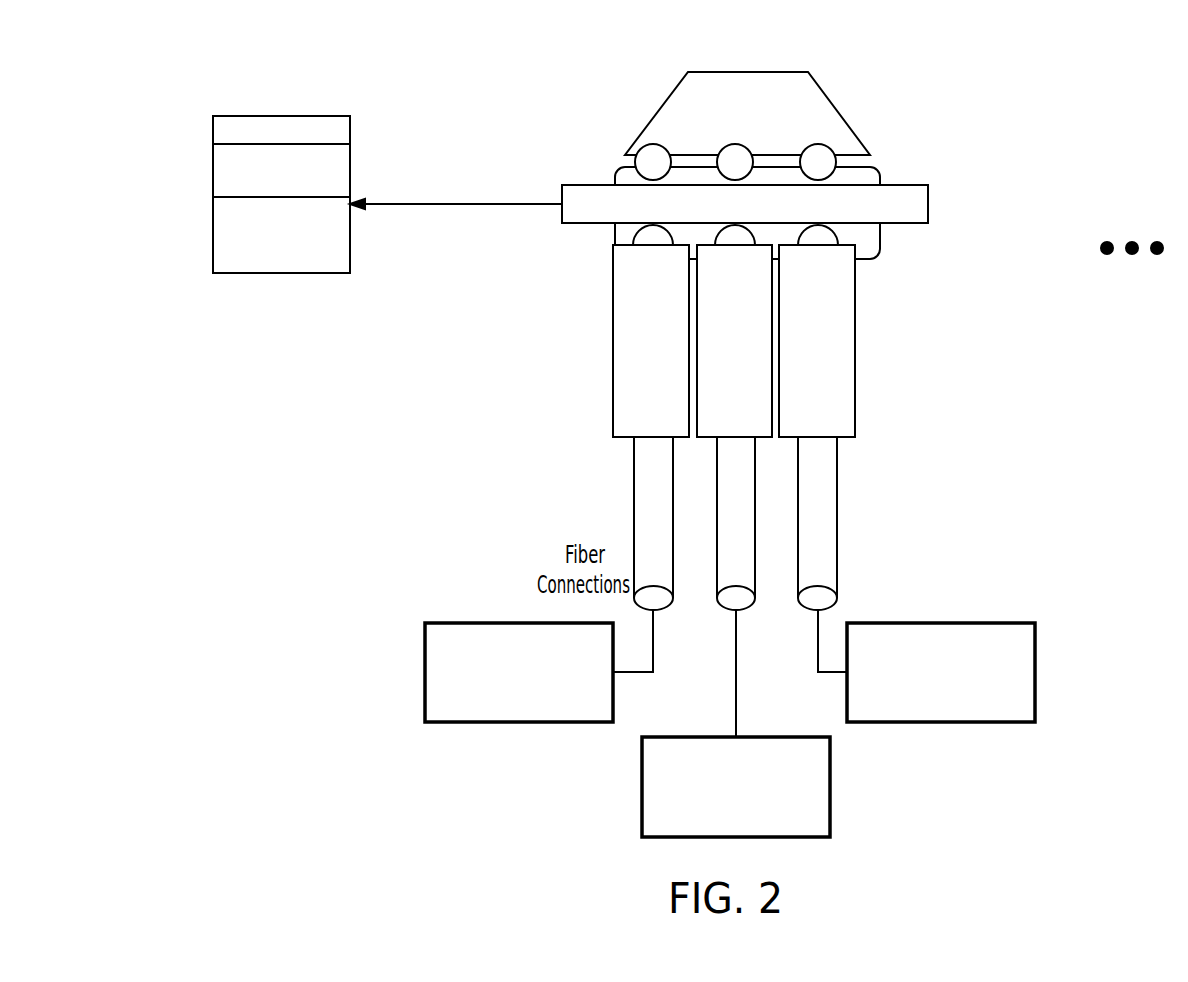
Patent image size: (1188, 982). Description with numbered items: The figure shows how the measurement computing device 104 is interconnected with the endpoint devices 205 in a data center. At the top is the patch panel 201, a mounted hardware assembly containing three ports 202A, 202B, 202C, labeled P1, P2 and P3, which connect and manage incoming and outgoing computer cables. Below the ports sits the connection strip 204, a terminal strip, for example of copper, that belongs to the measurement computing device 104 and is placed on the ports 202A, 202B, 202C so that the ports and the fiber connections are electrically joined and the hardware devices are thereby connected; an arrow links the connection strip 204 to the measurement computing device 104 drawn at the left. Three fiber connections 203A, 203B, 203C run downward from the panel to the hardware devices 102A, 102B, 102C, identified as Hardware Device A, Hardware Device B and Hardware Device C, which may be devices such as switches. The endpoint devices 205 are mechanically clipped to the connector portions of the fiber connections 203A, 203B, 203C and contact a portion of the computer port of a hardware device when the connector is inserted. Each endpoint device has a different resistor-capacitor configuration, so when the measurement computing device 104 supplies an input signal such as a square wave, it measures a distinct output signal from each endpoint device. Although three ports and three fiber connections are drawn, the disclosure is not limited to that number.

The patch panel 201 is at (776, 34).
The port 202A is at (632, 164).
The port 202B is at (736, 143).
The port 202C is at (843, 153).
The connection strip 204 is at (1012, 203).
The endpoint devices 205 is at (932, 343).
The fiber connection 203A is at (633, 518).
The fiber connection 203B is at (757, 585).
The fiber connection 203C is at (838, 518).
The hardware device 102A is at (423, 672).
The hardware device 102B is at (832, 787).
The hardware device 102C is at (1037, 672).
The measurement computing device 104 is at (218, 226).